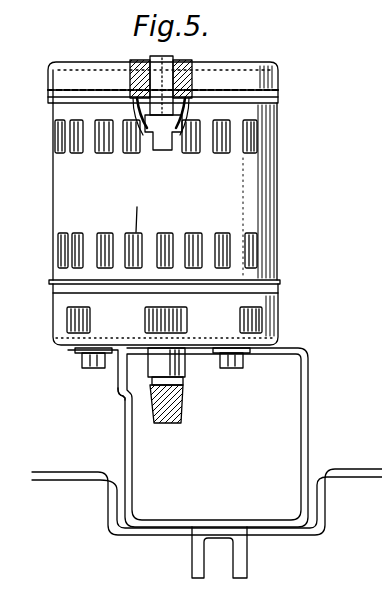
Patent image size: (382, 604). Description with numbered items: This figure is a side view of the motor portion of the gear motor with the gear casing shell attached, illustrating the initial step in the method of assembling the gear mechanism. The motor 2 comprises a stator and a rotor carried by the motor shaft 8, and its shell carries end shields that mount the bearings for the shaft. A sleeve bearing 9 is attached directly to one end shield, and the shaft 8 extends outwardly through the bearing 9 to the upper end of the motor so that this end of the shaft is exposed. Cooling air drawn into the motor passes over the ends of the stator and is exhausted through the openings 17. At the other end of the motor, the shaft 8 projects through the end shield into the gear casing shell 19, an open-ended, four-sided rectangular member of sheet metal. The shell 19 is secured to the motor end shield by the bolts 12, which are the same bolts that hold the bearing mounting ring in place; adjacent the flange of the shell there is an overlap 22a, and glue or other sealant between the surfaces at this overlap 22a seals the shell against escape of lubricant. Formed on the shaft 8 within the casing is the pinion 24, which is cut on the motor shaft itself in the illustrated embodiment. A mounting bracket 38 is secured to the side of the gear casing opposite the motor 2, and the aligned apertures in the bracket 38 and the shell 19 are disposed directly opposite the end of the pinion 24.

The motor 2 is at (280, 190).
The motor shaft 8 is at (160, 57).
The sleeve bearing 9 is at (195, 65).
The bolts 12 is at (100, 369).
The openings 17 is at (160, 153).
The shell 19 is at (308, 418).
The overlap 22a is at (120, 396).
The pinion 24 is at (184, 407).
The mounting bracket 38 is at (113, 534).